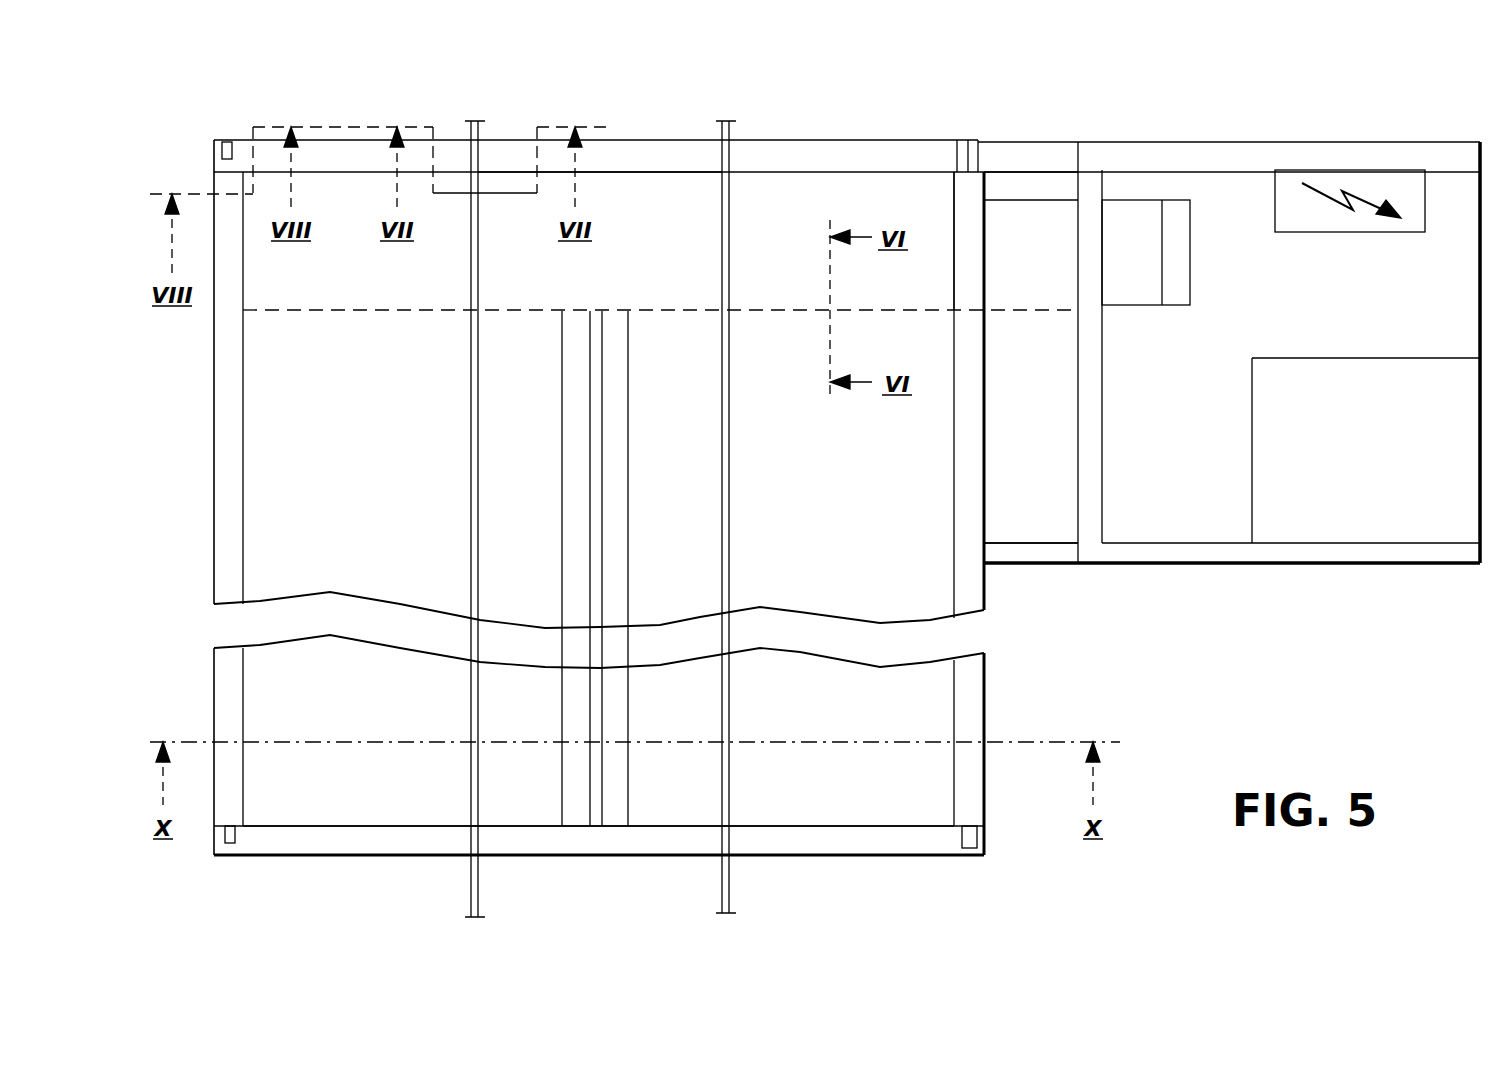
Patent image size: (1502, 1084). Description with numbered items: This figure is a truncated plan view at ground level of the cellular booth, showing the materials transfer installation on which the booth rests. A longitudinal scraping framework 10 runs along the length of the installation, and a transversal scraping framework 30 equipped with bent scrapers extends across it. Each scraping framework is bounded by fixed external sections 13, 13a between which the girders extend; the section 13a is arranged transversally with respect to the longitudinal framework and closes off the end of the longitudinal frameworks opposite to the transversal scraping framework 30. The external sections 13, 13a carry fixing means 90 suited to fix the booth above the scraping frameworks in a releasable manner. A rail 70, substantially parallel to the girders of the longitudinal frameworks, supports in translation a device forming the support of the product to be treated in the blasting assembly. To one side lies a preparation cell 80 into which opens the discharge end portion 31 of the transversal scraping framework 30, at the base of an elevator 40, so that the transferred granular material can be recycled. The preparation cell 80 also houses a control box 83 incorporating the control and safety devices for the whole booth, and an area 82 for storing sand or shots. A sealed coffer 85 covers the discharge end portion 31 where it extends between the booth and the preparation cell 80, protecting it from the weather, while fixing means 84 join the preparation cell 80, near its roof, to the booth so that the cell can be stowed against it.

The longitudinal scraping framework 10 is at (351, 764).
The fixed external section 13 is at (778, 150).
The fixed external section 13a is at (778, 843).
The transversal scraping framework 30 is at (697, 237).
The discharge end portion 31 is at (962, 248).
The elevator 40 is at (1137, 287).
The rail 70 is at (480, 803).
The preparation cell 80 is at (1210, 577).
The storage area 82 is at (1440, 382).
The control box 83 is at (1337, 226).
The fixing means 84 is at (1032, 153).
The sealed coffer 85 is at (1027, 275).
The fixing means 90 is at (222, 150).